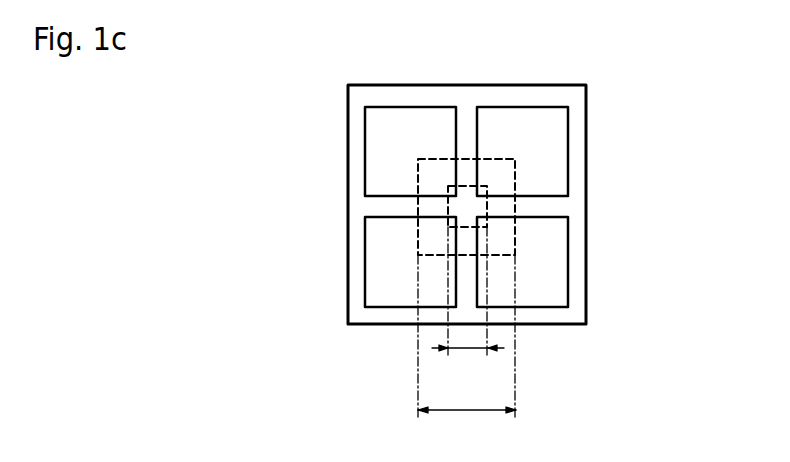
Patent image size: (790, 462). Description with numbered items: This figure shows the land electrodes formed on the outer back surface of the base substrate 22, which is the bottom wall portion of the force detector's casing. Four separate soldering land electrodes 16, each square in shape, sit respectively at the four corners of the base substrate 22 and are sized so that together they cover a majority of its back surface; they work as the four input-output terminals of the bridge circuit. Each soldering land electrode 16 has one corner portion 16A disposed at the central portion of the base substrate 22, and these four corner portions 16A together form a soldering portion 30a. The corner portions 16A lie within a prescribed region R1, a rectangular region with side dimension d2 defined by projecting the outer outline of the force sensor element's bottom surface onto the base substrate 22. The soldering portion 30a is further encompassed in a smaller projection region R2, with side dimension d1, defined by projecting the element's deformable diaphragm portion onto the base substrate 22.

The soldering land electrode 16 is at (402, 118).
The corner portion 16A is at (500, 180).
The base substrate 22 is at (536, 85).
The soldering portion 30a is at (485, 190).
The prescribed region R1 is at (516, 160).
The projection region R2 is at (488, 207).
The dimension of one side of projection region d1 is at (468, 368).
The dimension of one side of prescribed region d2 is at (467, 428).